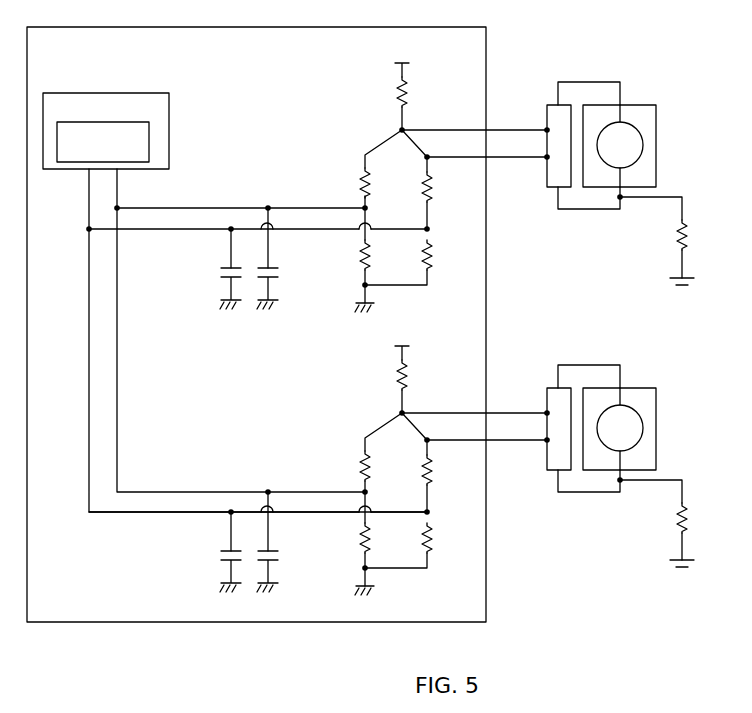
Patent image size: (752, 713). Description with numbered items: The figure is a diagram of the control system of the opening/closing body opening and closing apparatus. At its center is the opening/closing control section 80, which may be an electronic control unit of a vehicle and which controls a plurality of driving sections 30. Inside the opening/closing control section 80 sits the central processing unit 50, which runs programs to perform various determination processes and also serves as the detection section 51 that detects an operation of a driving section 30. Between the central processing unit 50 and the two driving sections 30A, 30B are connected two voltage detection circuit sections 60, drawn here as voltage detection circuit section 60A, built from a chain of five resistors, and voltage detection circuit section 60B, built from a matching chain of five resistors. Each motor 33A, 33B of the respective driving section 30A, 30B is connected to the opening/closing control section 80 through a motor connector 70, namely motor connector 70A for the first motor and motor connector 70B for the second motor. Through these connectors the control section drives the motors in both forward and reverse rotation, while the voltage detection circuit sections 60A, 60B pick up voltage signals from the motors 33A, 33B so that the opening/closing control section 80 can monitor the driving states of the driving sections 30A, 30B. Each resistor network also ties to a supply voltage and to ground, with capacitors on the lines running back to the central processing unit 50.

The opening/closing control section 80 is at (488, 57).
The central processing unit (CPU) 50 is at (169, 98).
The detection section 51 is at (149, 140).
The voltage detection circuit section 60 is at (354, 330).
The voltage detection circuit section 60A is at (327, 168).
The voltage detection circuit section 60B is at (327, 447).
The motor connector 70 is at (572, 278).
The motor connector 70A is at (551, 102).
The motor connector 70B is at (551, 386).
The driving section 30 is at (649, 324).
The driving section 30A is at (633, 101).
The driving section 30B is at (633, 384).
The motor 33A is at (641, 143).
The motor 33B is at (641, 426).